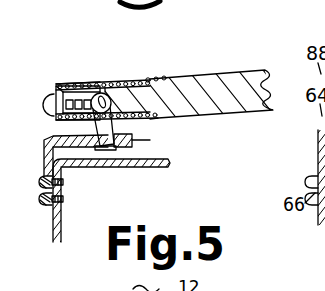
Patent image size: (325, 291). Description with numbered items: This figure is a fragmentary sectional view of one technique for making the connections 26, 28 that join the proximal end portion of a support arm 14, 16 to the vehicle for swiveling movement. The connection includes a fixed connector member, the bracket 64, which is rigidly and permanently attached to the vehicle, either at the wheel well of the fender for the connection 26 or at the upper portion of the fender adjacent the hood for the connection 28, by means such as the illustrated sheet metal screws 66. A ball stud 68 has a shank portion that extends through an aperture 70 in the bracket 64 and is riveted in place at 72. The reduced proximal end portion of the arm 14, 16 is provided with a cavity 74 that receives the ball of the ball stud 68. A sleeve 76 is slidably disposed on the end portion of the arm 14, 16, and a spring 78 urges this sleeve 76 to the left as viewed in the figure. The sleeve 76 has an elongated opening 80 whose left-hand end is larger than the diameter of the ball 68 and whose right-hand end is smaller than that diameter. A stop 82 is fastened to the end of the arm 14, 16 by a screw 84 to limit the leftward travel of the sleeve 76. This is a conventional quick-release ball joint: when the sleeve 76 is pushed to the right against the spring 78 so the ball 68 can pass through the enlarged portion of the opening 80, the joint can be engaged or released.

The support arm 14 is at (195, 83).
The support arm 16 is at (225, 78).
The connection 26 is at (146, 35).
The connection 28 is at (135, 57).
The bracket 64 is at (50, 139).
The sheet metal screws 66 is at (42, 195).
The ball stud 68 is at (103, 84).
The aperture 70 is at (194, 131).
The rivet 72 is at (117, 148).
The cavity 74 is at (79, 84).
The sleeve 76 is at (122, 80).
The spring 78 is at (150, 79).
The elongated opening 80 is at (91, 148).
The stop 82 is at (62, 86).
The screw 84 is at (47, 98).